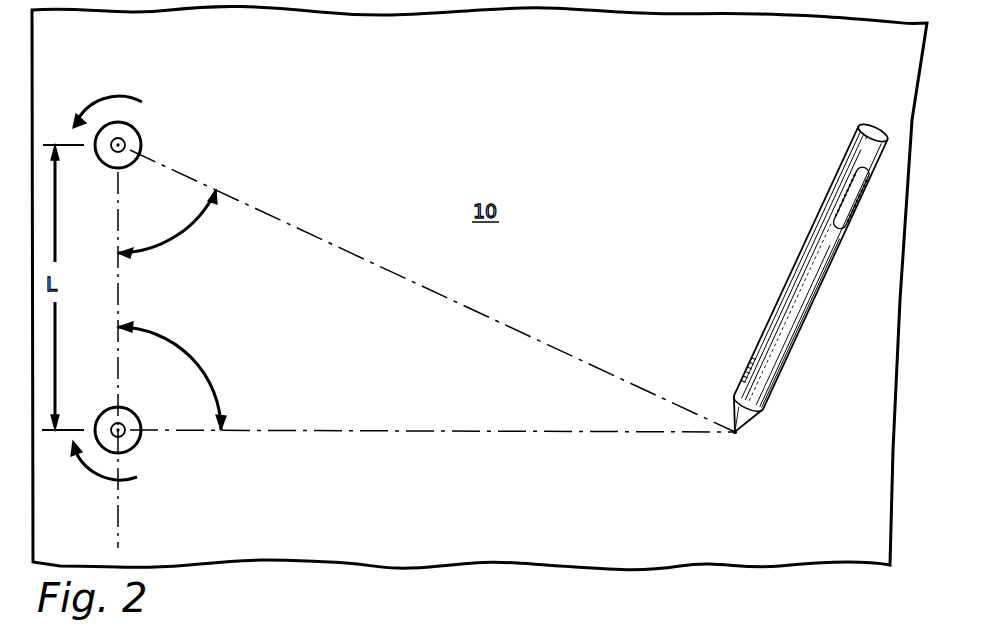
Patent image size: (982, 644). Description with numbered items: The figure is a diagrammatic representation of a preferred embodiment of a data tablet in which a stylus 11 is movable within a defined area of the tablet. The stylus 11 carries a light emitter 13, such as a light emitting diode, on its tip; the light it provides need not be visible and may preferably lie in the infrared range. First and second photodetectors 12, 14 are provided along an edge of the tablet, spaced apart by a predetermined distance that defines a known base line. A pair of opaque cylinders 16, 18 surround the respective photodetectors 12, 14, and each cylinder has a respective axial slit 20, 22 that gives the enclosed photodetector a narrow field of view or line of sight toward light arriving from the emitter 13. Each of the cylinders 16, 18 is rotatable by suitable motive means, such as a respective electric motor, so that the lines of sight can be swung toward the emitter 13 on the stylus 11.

The stylus 11 is at (800, 268).
The first photodetector 12 is at (127, 140).
The light emitter 13 is at (737, 434).
The second photodetector 14 is at (123, 425).
The opaque cylinder 16 is at (141, 145).
The opaque cylinder 18 is at (139, 444).
The slit 20 is at (130, 150).
The slit 22 is at (126, 431).